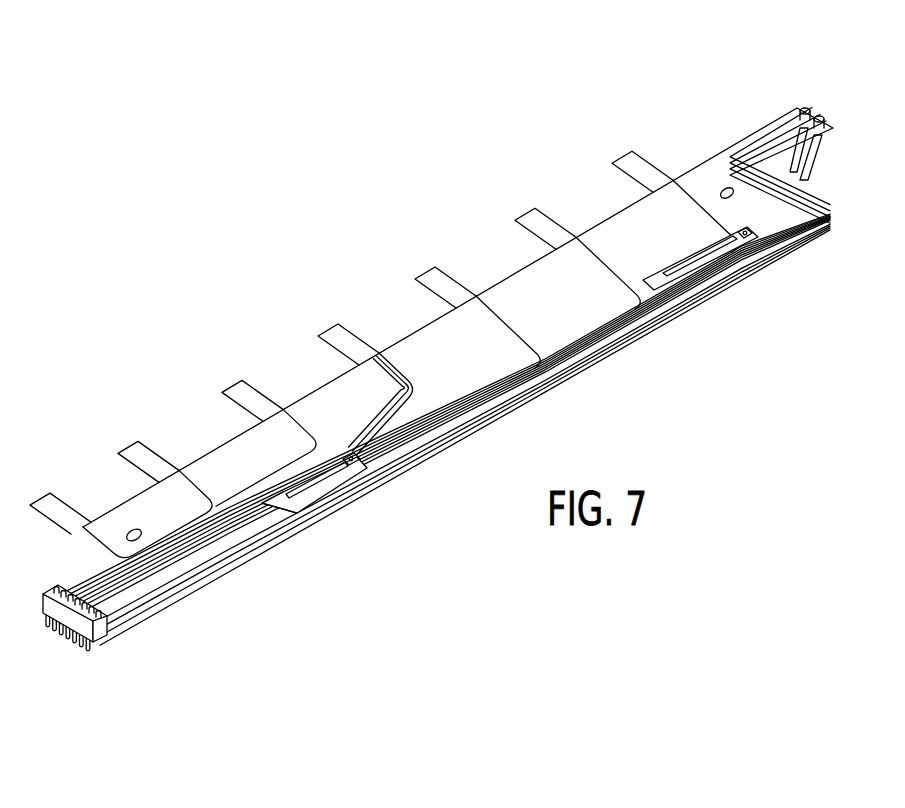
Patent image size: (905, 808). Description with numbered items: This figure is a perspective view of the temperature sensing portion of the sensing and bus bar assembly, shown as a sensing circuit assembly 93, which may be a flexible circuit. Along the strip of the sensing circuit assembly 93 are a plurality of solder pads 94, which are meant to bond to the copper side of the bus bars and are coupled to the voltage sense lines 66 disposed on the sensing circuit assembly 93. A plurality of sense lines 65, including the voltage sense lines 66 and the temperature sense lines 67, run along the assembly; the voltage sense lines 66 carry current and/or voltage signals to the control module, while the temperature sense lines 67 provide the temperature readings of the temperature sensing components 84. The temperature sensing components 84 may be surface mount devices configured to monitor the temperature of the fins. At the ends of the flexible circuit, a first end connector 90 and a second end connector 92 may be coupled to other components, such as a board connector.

The sensing circuit assembly 93 is at (493, 177).
The solder pads 94 is at (127, 448).
The sense lines 65 is at (283, 423).
The voltage sense lines 66 is at (377, 403).
The first end connector 90 is at (61, 656).
The temperature sensing components 84 is at (358, 468).
The temperature sense lines 67 is at (272, 510).
The second end connector 92 is at (824, 95).